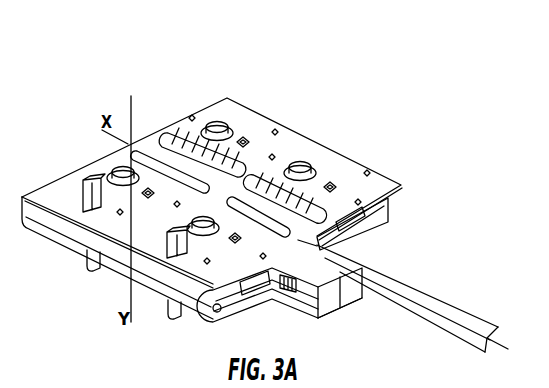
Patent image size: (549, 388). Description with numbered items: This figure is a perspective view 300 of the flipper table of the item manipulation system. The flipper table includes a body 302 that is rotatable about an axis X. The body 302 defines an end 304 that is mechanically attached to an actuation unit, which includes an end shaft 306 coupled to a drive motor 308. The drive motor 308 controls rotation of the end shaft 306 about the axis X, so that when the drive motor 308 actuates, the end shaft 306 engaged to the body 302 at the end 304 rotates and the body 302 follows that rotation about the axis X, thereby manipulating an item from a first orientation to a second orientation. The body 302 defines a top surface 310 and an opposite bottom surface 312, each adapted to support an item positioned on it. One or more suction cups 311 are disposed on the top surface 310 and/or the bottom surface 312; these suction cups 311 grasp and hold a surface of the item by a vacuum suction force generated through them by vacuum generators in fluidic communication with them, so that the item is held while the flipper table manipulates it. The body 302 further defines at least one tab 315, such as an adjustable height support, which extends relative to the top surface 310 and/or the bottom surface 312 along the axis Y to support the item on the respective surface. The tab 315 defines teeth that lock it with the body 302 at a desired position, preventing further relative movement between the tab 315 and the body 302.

The perspective view 300 is at (292, 60).
The body 302 is at (380, 187).
The end 304 is at (378, 231).
The end shaft 306 is at (409, 288).
The drive motor 308 is at (335, 305).
The top surface 310 is at (348, 167).
The suction cups 311 is at (203, 214).
The bottom surface 312 is at (237, 320).
The tab 315 is at (93, 178).